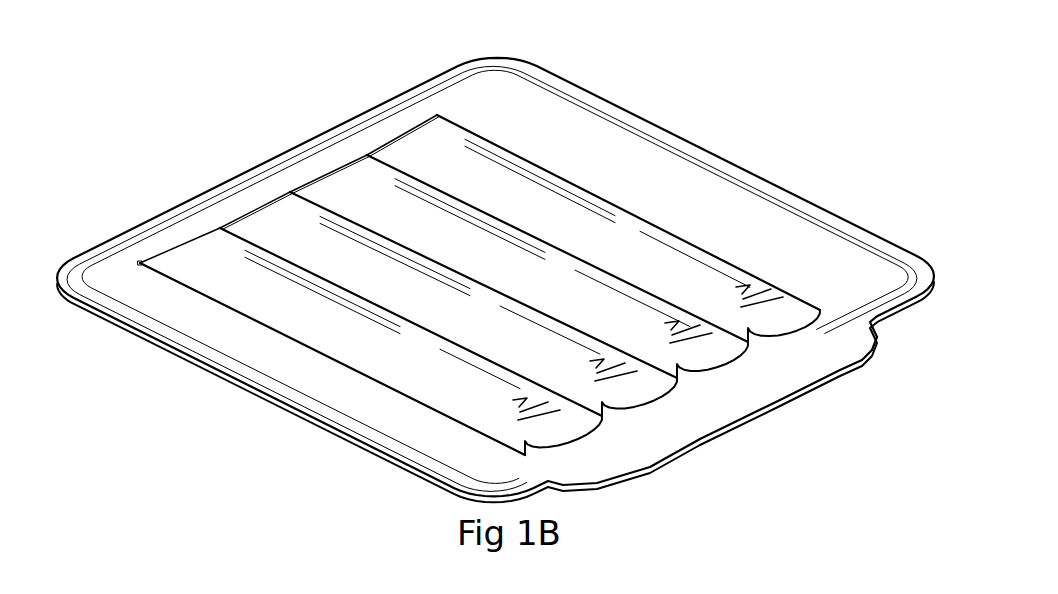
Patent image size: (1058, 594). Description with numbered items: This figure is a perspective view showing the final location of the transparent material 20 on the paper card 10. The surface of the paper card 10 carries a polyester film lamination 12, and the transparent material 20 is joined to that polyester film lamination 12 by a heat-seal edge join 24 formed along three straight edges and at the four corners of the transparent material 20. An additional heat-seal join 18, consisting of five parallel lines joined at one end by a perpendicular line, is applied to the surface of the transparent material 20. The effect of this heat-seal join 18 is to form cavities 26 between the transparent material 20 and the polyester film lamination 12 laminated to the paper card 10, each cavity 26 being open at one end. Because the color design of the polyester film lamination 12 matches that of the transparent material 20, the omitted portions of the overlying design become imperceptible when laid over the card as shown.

The paper card 10 is at (233, 378).
The polyester film lamination 12 is at (745, 177).
The heat-seal join 18 is at (167, 253).
The transparent material 20 is at (650, 161).
The heat-seal edge join 24 is at (88, 264).
The cavities 26 is at (530, 432).